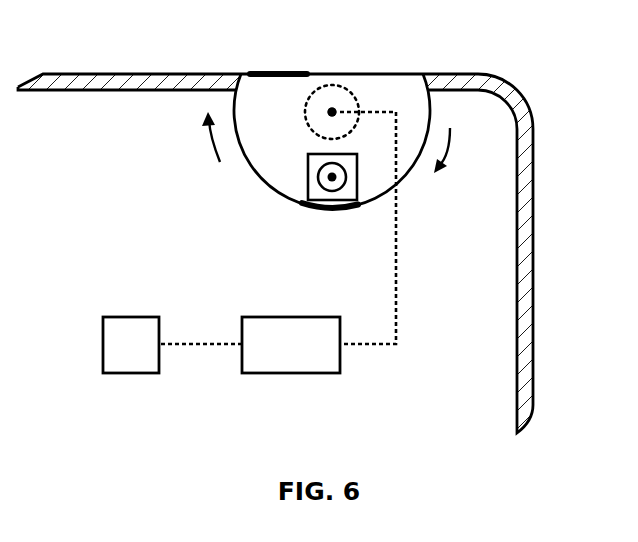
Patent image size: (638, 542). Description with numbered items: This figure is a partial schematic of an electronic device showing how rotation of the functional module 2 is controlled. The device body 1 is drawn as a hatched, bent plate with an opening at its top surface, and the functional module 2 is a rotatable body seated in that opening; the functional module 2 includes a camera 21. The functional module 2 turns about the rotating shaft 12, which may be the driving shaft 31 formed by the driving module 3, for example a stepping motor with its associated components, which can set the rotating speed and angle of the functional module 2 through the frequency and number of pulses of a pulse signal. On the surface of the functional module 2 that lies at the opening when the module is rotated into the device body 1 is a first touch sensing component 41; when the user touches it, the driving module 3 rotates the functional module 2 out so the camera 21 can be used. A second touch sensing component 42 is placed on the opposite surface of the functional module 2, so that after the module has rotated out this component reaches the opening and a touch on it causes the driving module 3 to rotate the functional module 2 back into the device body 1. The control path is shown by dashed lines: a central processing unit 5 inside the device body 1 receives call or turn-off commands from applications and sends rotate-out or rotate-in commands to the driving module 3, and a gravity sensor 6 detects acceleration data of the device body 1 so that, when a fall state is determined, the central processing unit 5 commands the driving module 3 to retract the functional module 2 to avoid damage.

The device body 1 is at (528, 180).
The functional module 2 is at (270, 170).
The driving module 3 is at (325, 90).
The rotating shaft 12 is at (336, 110).
The driving shaft 31 is at (407, 82).
The camera 21 is at (320, 198).
The first touch sensing component 41 is at (266, 72).
The second touch sensing component 42 is at (350, 214).
The central processing unit 5 is at (262, 321).
The gravity sensor 6 is at (118, 321).